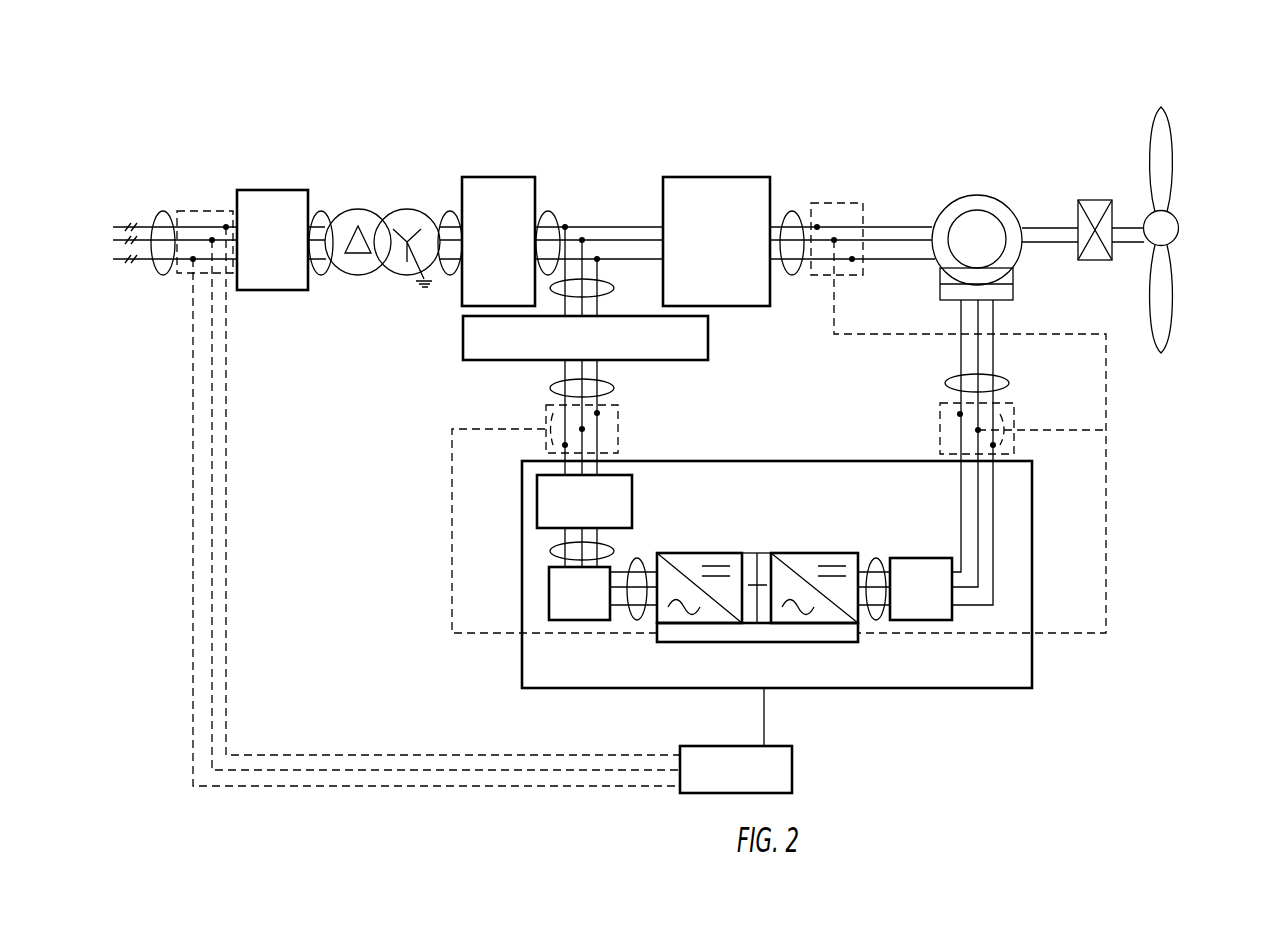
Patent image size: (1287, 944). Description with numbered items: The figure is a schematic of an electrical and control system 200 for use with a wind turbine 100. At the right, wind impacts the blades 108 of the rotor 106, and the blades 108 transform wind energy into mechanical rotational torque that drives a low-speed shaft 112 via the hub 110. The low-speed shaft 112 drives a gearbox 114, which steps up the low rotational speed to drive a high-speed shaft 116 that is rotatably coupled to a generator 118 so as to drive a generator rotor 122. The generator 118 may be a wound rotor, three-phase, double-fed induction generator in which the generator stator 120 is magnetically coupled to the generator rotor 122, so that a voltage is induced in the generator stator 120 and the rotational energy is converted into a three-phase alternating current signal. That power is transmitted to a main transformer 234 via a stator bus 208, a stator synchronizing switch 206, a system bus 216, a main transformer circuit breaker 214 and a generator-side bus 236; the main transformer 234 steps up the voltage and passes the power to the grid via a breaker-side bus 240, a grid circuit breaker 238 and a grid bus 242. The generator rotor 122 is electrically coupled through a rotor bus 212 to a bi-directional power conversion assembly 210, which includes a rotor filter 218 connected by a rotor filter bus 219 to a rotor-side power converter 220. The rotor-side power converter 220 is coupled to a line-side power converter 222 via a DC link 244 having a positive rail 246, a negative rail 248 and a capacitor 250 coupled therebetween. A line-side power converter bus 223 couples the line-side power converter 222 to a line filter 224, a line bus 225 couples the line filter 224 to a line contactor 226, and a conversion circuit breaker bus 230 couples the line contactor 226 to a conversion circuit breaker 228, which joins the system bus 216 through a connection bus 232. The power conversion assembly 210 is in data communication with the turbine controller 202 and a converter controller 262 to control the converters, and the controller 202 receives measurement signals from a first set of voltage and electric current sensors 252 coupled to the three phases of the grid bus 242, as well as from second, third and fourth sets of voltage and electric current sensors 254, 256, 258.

The wind turbine 100 is at (1155, 90).
The rotor 106 is at (1184, 200).
The blades 108 is at (1172, 158).
The hub 110 is at (1180, 228).
The low-speed shaft 112 is at (1130, 226).
The gearbox 114 is at (1093, 200).
The high-speed shaft 116 is at (1051, 228).
The generator 118 is at (968, 157).
The generator stator 120 is at (999, 203).
The generator rotor 122 is at (965, 226).
The electrical and control system 200 is at (195, 108).
The turbine controller 202 is at (792, 770).
The stator synchronizing switch 206 is at (729, 177).
The stator bus 208 is at (795, 210).
The power conversion assembly 210 is at (1033, 530).
The rotor bus 212 is at (1009, 383).
The main transformer circuit breaker 214 is at (500, 177).
The system bus 216 is at (555, 212).
The rotor filter 218 is at (922, 558).
The rotor filter bus 219 is at (876, 557).
The rotor-side power converter 220 is at (860, 614).
The line-side power converter 222 is at (657, 618).
The line-side power converter bus 223 is at (637, 558).
The line filter 224 is at (549, 588).
The line bus 225 is at (550, 551).
The line contactor 226 is at (537, 501).
The conversion circuit breaker 228 is at (728, 337).
The conversion circuit breaker bus 230 is at (614, 386).
The connection bus 232 is at (614, 288).
The main transformer 234 is at (408, 210).
The generator-side bus 236 is at (450, 210).
The grid circuit breaker 238 is at (272, 190).
The breaker-side bus 240 is at (321, 210).
The grid bus 242 is at (165, 210).
The DC link 244 is at (745, 514).
The positive rail 246 is at (765, 553).
The negative rail 248 is at (764, 625).
The capacitor 250 is at (750, 585).
The first set of voltage and electric current sensors 252 is at (183, 291).
The second set of voltage and electric current sensors 254 is at (846, 201).
The third set of voltage and electric current sensors 256 is at (938, 435).
The fourth set of voltage and electric current sensors 258 is at (618, 442).
The converter controller 262 is at (813, 636).